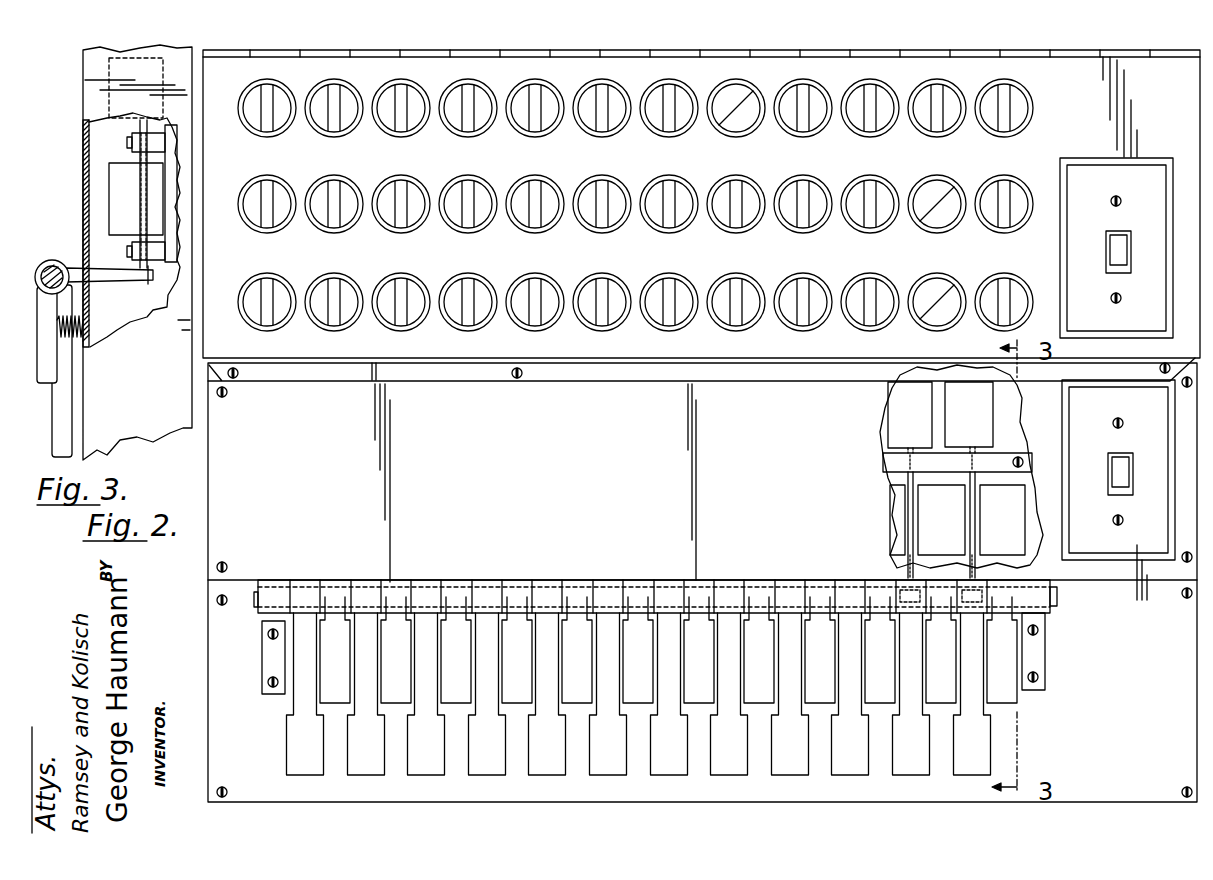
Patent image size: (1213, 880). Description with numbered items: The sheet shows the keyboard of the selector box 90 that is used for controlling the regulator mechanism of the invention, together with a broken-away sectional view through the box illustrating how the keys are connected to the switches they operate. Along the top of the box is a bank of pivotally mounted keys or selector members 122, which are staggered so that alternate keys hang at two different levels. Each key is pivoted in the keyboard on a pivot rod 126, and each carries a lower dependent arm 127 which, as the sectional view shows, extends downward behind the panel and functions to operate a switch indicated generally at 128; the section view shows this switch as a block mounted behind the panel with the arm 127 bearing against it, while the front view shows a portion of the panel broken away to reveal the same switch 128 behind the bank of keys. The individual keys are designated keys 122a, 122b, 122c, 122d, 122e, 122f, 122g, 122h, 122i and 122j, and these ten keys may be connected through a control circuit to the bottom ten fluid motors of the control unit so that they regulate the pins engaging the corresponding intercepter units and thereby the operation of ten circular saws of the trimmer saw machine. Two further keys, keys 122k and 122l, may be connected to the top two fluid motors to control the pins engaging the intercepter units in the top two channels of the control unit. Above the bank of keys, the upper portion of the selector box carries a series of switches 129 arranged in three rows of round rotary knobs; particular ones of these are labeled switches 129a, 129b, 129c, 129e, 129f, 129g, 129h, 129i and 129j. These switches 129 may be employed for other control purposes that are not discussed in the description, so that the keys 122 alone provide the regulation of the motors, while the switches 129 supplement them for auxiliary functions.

In FIG. 2, the selector box 90 is at (263, 525).
In FIG. 2, the keys or selector members 122 is at (517, 632).
In FIG. 3, the keys or selector members 122 is at (60, 408).
In FIG. 2, the key 122a is at (1007, 650).
In FIG. 2, the key 122b is at (972, 694).
In FIG. 2, the key 122c is at (945, 650).
In FIG. 2, the key 122d is at (911, 694).
In FIG. 2, the key 122e is at (884, 650).
In FIG. 2, the key 122f is at (849, 694).
In FIG. 2, the key 122g is at (821, 650).
In FIG. 2, the key 122h is at (788, 694).
In FIG. 2, the key 122i is at (759, 650).
In FIG. 2, the key 122j is at (729, 694).
In FIG. 2, the key 122k is at (703, 650).
In FIG. 2, the key 122l is at (669, 694).
In FIG. 2, the pivot rod 126 is at (1057, 597).
In FIG. 3, the pivot rod 126 is at (62, 252).
In FIG. 3, the lower dependent arm 127 is at (118, 279).
In FIG. 2, the switch 128 is at (900, 506).
In FIG. 3, the switch 128 is at (108, 123).
In FIG. 2, the switches 129 is at (599, 185).
In FIG. 2, the switch 129a is at (1020, 100).
In FIG. 2, the switch 129b is at (1016, 191).
In FIG. 2, the switch 129c is at (1017, 288).
In FIG. 2, the switch 129e is at (948, 93).
In FIG. 2, the switch 129f is at (957, 167).
In FIG. 2, the switch 129g is at (957, 270).
In FIG. 2, the switch 129h is at (890, 74).
In FIG. 2, the switch 129i is at (890, 172).
In FIG. 2, the switch 129j is at (890, 270).